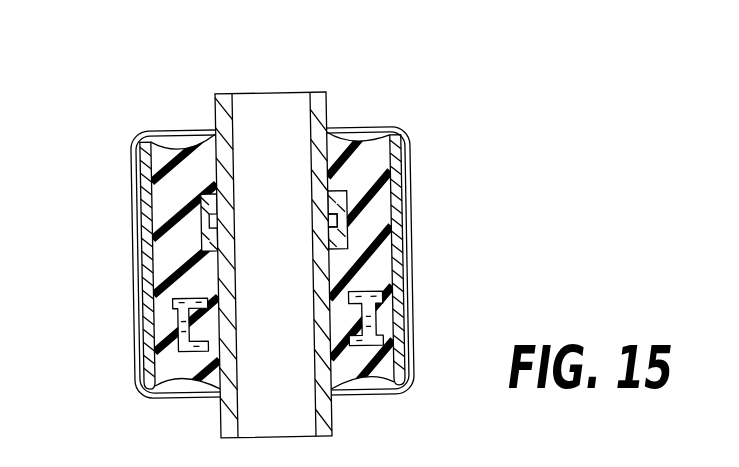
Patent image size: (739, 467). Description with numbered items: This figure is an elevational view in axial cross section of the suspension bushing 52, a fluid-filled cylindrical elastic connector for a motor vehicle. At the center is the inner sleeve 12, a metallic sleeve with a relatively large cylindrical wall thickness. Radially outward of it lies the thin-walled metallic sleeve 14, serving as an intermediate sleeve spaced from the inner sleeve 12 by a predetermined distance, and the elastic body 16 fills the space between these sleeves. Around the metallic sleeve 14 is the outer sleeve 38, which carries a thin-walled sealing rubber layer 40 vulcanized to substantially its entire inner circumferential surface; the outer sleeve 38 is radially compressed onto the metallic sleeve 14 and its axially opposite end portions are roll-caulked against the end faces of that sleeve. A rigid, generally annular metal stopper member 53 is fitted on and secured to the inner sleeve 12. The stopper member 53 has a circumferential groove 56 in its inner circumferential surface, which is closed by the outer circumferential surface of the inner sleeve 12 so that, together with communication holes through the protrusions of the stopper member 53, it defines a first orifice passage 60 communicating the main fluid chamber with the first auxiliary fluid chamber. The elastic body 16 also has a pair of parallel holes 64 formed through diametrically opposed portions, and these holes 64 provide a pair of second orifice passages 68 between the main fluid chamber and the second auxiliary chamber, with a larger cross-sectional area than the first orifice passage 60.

The inner sleeve 12 is at (330, 418).
The metallic sleeve 14 is at (394, 203).
The elastic body 16 is at (170, 208).
The outer sleeve 38 is at (132, 266).
The sealing rubber layer 40 is at (140, 165).
The suspension bushing 52 is at (413, 74).
The stopper member 53 is at (371, 240).
The circumferential groove 56 is at (214, 222).
The first orifice passage 60 is at (333, 220).
The parallel holes 64 is at (180, 335).
The second orifice passages 68 is at (183, 318).